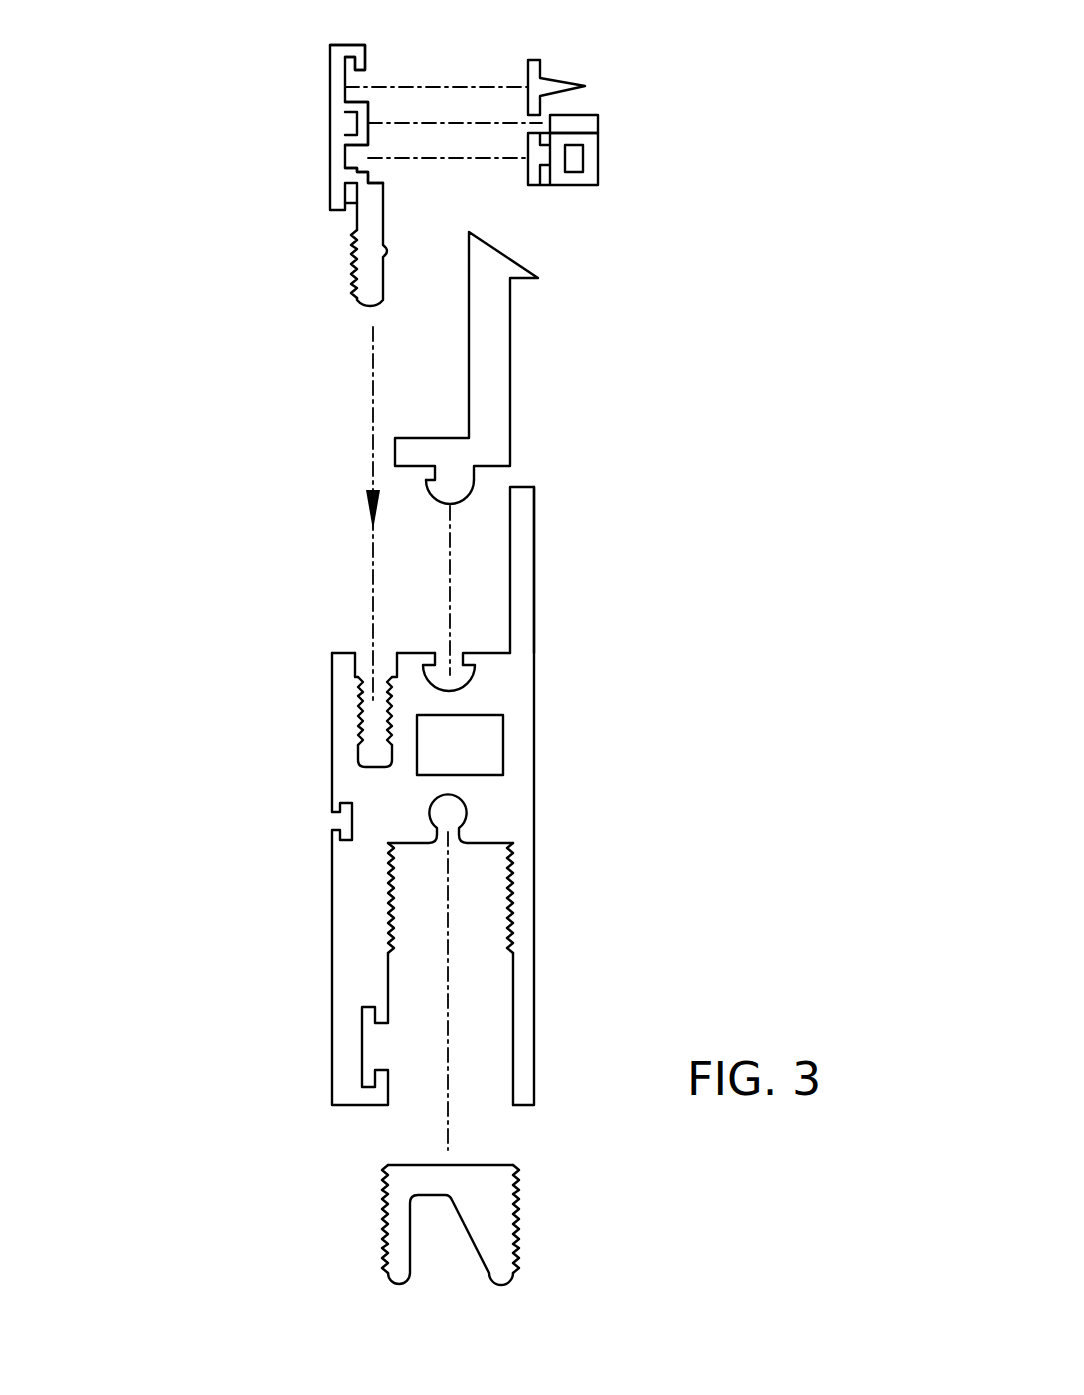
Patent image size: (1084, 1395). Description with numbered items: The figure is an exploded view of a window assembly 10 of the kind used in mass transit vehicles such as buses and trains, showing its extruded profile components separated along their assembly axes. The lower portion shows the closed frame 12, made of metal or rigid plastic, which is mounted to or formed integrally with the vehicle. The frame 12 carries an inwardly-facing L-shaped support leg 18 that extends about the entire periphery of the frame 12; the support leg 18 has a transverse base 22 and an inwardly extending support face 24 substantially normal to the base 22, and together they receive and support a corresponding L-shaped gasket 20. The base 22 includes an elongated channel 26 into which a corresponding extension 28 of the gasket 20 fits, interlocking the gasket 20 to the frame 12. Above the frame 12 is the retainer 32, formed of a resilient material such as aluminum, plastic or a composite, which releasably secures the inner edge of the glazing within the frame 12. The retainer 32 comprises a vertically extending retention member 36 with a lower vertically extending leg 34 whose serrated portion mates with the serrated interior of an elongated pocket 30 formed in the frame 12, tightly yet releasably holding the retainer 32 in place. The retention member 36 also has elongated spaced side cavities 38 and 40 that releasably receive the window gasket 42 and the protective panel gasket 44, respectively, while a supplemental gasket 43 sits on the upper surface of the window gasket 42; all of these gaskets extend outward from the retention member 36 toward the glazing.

The window assembly 10 is at (705, 614).
The frame 12 is at (546, 841).
The support leg 18 is at (548, 575).
The gasket 20 is at (522, 378).
The base 22 is at (497, 650).
The support face 24 is at (522, 514).
The channel 26 is at (467, 677).
The extension 28 is at (457, 495).
The pocket 30 is at (373, 732).
The retainer 32 is at (322, 104).
The leg 34 is at (372, 277).
The retention member 36 is at (335, 78).
The side cavity 38 is at (343, 181).
The side cavity 40 is at (352, 56).
The window gasket 42 is at (595, 162).
The supplemental gasket 43 is at (570, 122).
The protective panel gasket 44 is at (562, 78).